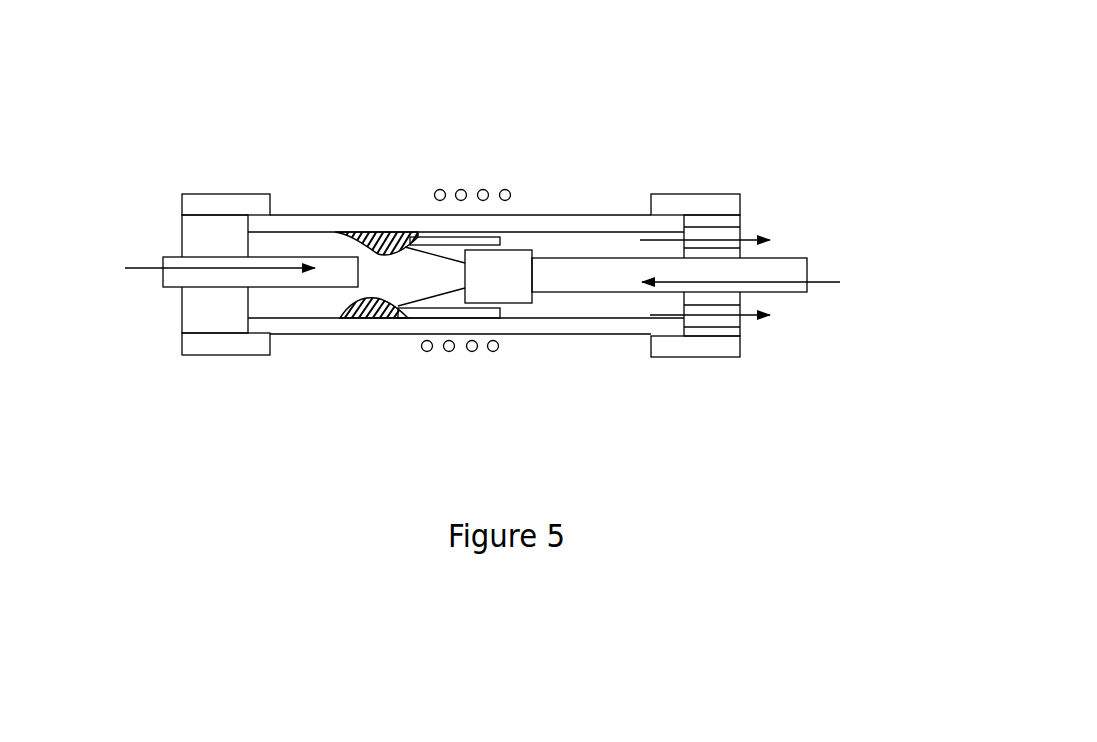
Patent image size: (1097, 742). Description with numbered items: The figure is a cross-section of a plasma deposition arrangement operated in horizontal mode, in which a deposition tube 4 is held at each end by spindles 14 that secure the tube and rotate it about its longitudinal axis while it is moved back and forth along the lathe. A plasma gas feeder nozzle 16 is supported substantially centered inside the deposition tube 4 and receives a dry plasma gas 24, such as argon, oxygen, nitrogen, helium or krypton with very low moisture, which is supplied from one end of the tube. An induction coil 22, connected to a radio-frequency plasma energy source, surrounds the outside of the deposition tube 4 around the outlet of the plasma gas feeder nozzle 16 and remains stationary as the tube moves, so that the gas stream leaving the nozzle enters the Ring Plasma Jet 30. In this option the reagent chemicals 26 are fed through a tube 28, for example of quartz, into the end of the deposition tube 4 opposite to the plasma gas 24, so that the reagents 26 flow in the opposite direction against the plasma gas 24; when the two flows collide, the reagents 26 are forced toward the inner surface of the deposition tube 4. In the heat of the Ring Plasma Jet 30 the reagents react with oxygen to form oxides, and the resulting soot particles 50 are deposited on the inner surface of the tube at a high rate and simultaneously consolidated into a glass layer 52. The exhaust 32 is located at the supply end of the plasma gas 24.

The deposition tube 4 is at (672, 432).
The spindles 14 is at (282, 410).
The plasma gas feeder nozzle 16 is at (795, 119).
The induction coil 22 is at (441, 343).
The plasma gas 24 is at (673, 280).
The reagent chemicals 26 is at (137, 268).
The tube 28 is at (221, 252).
The Ring Plasma Jet 30 is at (535, 393).
The exhaust 32 is at (720, 279).
The soot particles 50 is at (435, 167).
The glass layer 52 is at (597, 373).